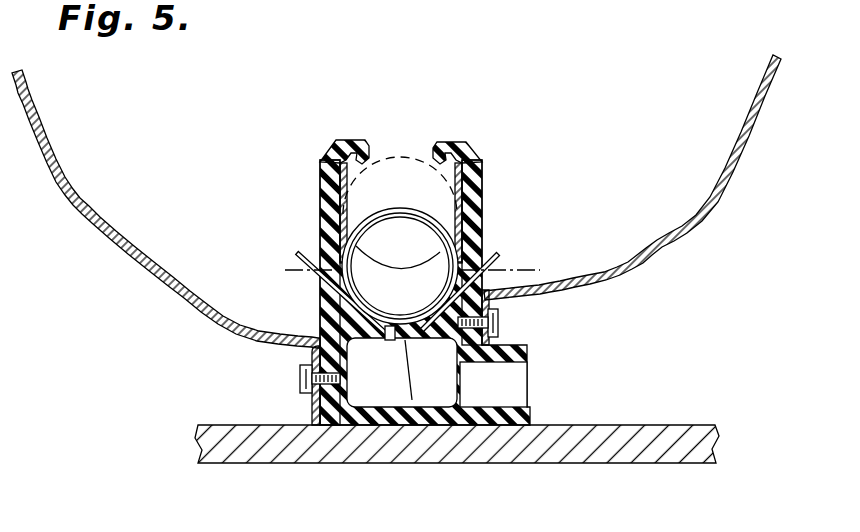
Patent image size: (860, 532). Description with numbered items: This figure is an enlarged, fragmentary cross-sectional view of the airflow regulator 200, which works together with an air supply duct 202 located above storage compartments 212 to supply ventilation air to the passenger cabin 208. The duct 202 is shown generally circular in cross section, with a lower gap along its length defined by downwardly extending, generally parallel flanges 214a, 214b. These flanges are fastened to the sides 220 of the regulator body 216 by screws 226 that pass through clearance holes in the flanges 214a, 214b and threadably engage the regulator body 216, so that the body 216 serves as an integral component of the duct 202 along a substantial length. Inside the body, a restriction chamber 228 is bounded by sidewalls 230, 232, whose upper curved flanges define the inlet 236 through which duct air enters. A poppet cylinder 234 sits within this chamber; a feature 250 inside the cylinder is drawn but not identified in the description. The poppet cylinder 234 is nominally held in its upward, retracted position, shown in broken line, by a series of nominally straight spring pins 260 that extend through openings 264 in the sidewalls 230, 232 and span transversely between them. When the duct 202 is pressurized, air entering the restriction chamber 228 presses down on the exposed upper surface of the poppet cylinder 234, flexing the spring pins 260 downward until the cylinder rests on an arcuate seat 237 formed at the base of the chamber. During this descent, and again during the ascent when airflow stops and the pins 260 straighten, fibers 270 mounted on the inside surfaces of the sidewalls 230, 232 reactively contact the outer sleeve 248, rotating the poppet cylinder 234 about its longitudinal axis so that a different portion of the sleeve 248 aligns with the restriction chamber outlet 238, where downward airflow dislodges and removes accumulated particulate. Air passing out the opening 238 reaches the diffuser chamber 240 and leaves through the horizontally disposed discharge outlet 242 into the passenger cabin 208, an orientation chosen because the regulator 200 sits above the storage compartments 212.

The airflow regulator 200 is at (146, 351).
The air supply duct 202 is at (88, 214).
The passenger cabin 208 is at (716, 298).
The storage compartments 212 is at (716, 441).
The flange 214a is at (312, 418).
The flange 214b is at (493, 340).
The regulator body 216 is at (301, 311).
The sides of regulator body 220 is at (316, 326).
The screws 226 is at (300, 368).
The restriction chamber 228 is at (323, 160).
The sidewall 230 is at (320, 178).
The sidewall 232 is at (484, 187).
The poppet cylinder 234 is at (388, 210).
The inlet 236 is at (392, 152).
The arcuate seat 237 is at (382, 338).
The restriction chamber outlet 238 is at (407, 340).
The diffuser chamber 240 is at (368, 390).
The discharge outlet 242 is at (510, 397).
The outer sleeve 248 is at (417, 210).
The tube bore 250 is at (374, 232).
The spring pins 260 is at (500, 256).
The openings 264 is at (298, 255).
The fibers 270 is at (378, 160).